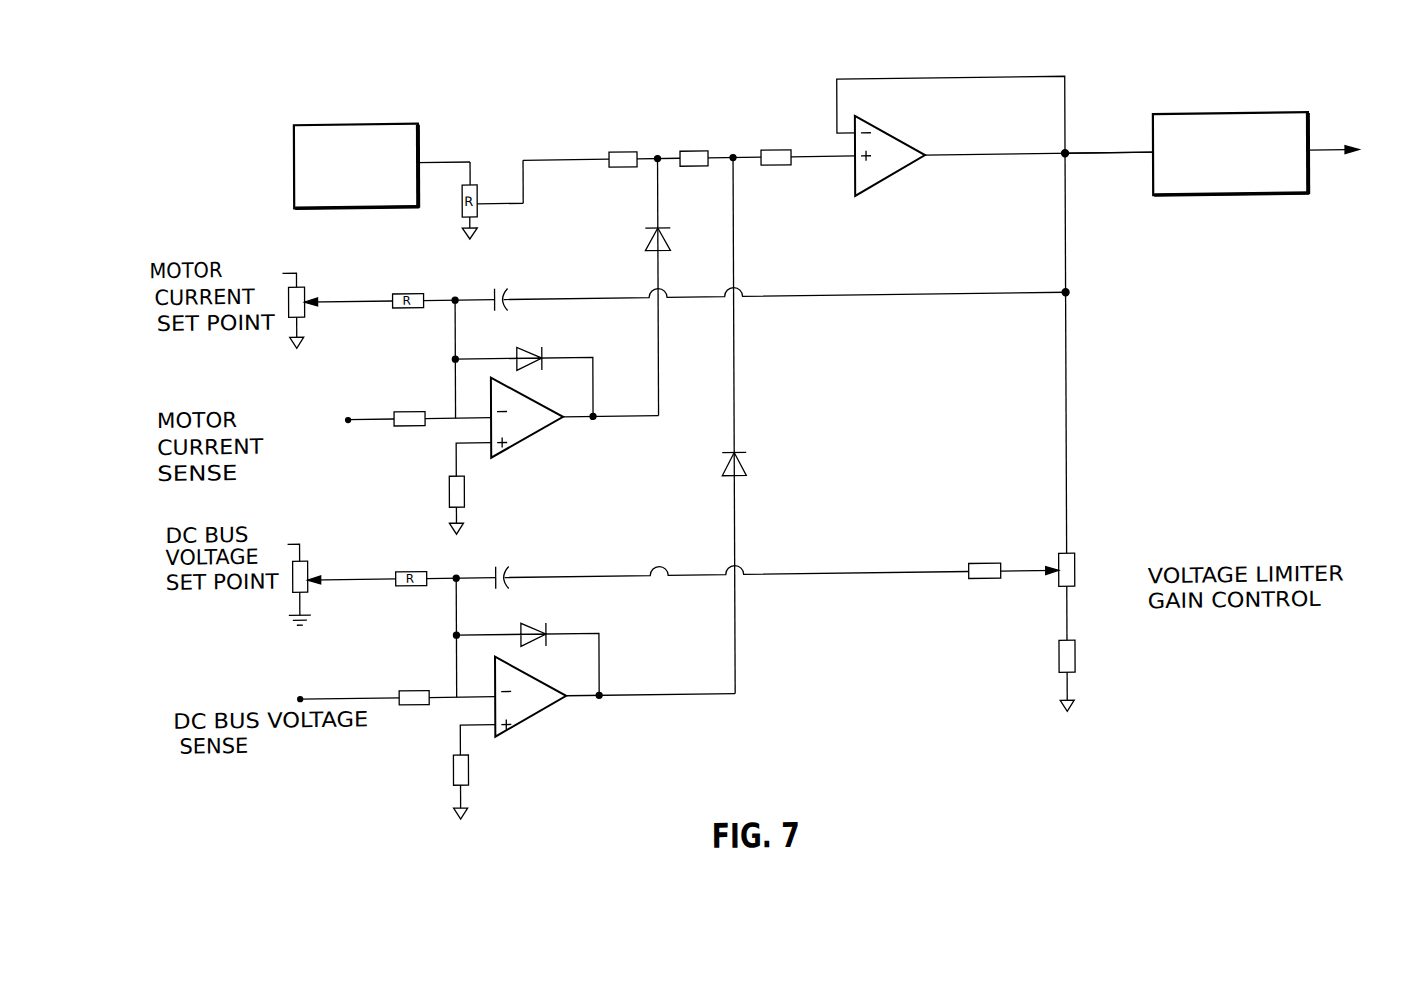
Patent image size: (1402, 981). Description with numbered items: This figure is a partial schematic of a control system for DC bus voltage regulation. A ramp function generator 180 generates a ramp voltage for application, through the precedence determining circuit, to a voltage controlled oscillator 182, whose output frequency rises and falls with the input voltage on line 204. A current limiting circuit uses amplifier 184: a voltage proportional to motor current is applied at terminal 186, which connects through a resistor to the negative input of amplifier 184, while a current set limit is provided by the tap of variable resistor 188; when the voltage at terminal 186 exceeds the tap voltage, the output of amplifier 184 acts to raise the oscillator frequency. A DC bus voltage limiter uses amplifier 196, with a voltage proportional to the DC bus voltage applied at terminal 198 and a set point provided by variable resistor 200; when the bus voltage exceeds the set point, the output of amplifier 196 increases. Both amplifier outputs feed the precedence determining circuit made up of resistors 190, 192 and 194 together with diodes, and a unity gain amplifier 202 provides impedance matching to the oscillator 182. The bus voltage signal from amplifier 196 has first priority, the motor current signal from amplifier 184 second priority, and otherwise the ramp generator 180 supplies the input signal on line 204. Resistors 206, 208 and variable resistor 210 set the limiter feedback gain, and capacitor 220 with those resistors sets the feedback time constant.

The ramp function generator 180 is at (343, 120).
The voltage controlled oscillator 182 is at (1256, 124).
The motor current limiting amplifier 184 is at (540, 432).
The terminal 186 is at (345, 413).
The variable resistor 188 is at (315, 294).
The resistor 190 is at (621, 149).
The resistor 192 is at (691, 149).
The resistor 194 is at (772, 149).
The DC bus voltage amplifier 196 is at (594, 720).
The terminal 198 is at (290, 694).
The variable resistor 200 is at (310, 557).
The unity gain amplifier 202 is at (995, 138).
The input line 204 is at (1099, 157).
The resistor 206 is at (1080, 657).
The resistor 208 is at (985, 560).
The variable resistor 210 is at (1078, 562).
The capacitor 220 is at (732, 557).